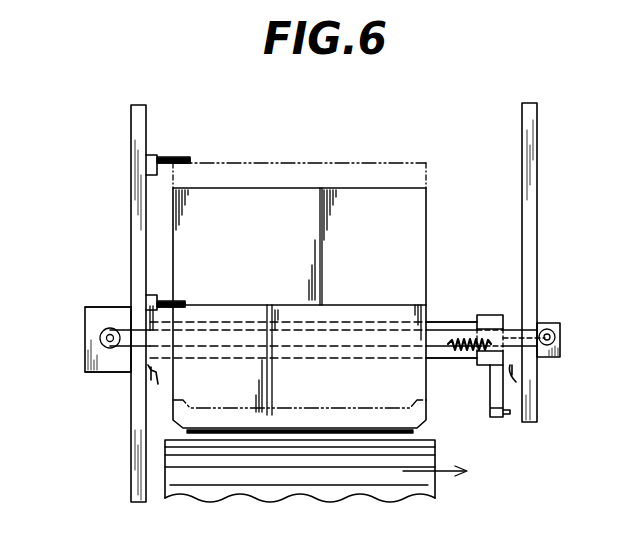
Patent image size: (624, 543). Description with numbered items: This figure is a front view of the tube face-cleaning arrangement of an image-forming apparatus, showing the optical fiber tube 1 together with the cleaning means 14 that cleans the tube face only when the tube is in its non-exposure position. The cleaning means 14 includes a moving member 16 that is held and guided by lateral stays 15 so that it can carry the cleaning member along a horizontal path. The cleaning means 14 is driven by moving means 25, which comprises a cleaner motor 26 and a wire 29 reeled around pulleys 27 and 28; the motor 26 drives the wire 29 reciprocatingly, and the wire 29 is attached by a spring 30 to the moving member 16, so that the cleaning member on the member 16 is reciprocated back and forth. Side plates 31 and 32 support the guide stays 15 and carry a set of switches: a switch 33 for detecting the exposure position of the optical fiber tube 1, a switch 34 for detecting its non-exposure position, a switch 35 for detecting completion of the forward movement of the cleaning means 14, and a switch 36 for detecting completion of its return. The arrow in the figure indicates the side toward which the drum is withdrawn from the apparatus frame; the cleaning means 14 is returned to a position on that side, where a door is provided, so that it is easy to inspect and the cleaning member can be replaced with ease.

The optical fiber tube 1 is at (173, 260).
The cleaning means 14 is at (491, 312).
The lateral stays 15 is at (322, 325).
The moving member 16 is at (490, 394).
The moving means 25 is at (106, 378).
The cleaner motor 26 is at (85, 331).
The pulley 27 is at (101, 343).
The pulley 28 is at (562, 333).
The wire 29 is at (441, 325).
The spring 30 is at (463, 351).
The side plate 31 is at (137, 173).
The side plate 32 is at (531, 215).
The switch 33 is at (157, 302).
The switch 34 is at (153, 158).
The switch 35 is at (149, 380).
The switch 36 is at (515, 374).